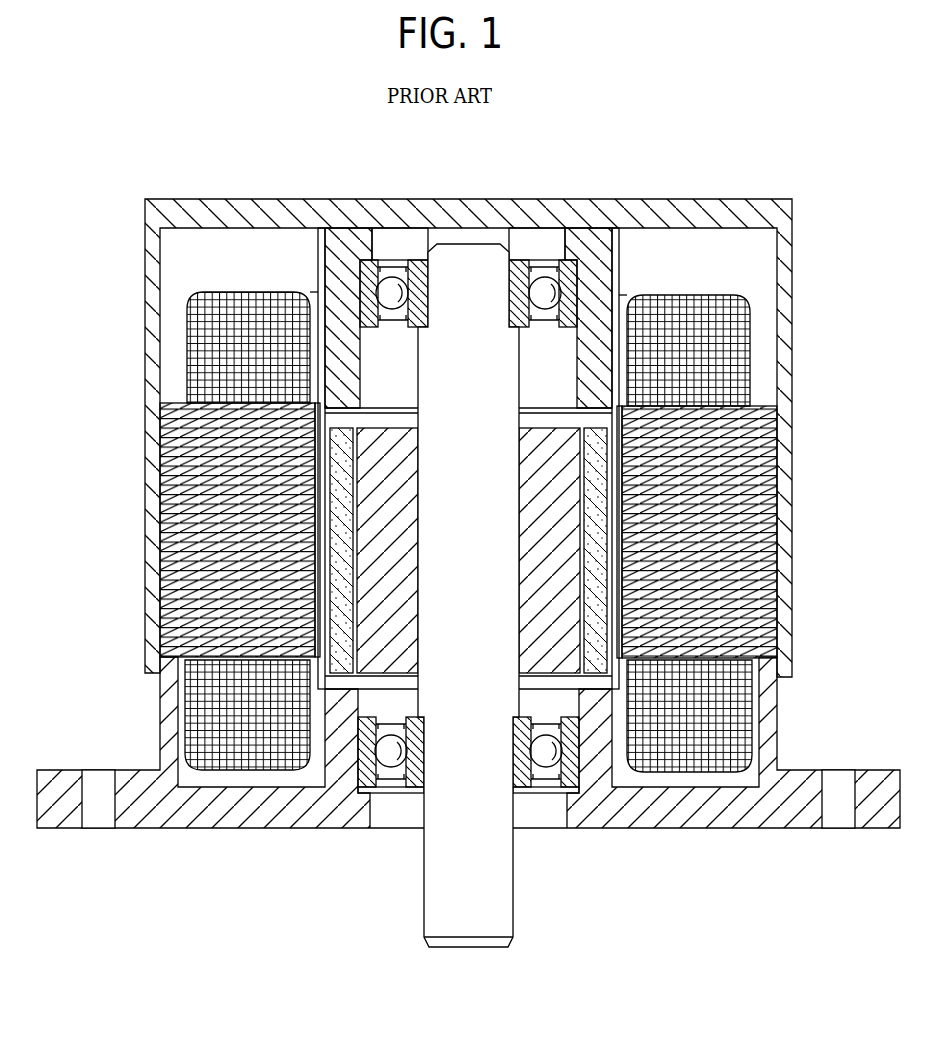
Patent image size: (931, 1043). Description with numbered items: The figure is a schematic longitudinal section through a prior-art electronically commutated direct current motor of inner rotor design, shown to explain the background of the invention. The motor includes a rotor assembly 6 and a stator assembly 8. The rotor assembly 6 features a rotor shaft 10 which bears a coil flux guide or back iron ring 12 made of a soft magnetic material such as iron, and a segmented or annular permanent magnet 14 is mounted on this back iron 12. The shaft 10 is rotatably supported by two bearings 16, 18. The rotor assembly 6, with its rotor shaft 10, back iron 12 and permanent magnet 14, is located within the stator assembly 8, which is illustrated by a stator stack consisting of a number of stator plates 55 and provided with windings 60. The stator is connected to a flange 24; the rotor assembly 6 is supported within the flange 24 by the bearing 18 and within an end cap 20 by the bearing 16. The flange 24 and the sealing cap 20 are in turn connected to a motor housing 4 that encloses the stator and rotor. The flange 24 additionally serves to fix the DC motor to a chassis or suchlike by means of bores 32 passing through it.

The motor housing 4 is at (677, 214).
The rotor assembly 6 is at (402, 248).
The stator assembly 8 is at (230, 248).
The rotor shaft 10 is at (493, 912).
The coil flux guide (back iron ring) 12 is at (570, 630).
The permanent magnet 14 is at (603, 552).
The bearing 16 is at (543, 283).
The bearing 18 is at (543, 756).
The end cap 20 is at (598, 220).
The flange 24 is at (245, 834).
The bores 32 is at (102, 808).
The stator plates 55 is at (742, 463).
The windings 60 is at (738, 353).